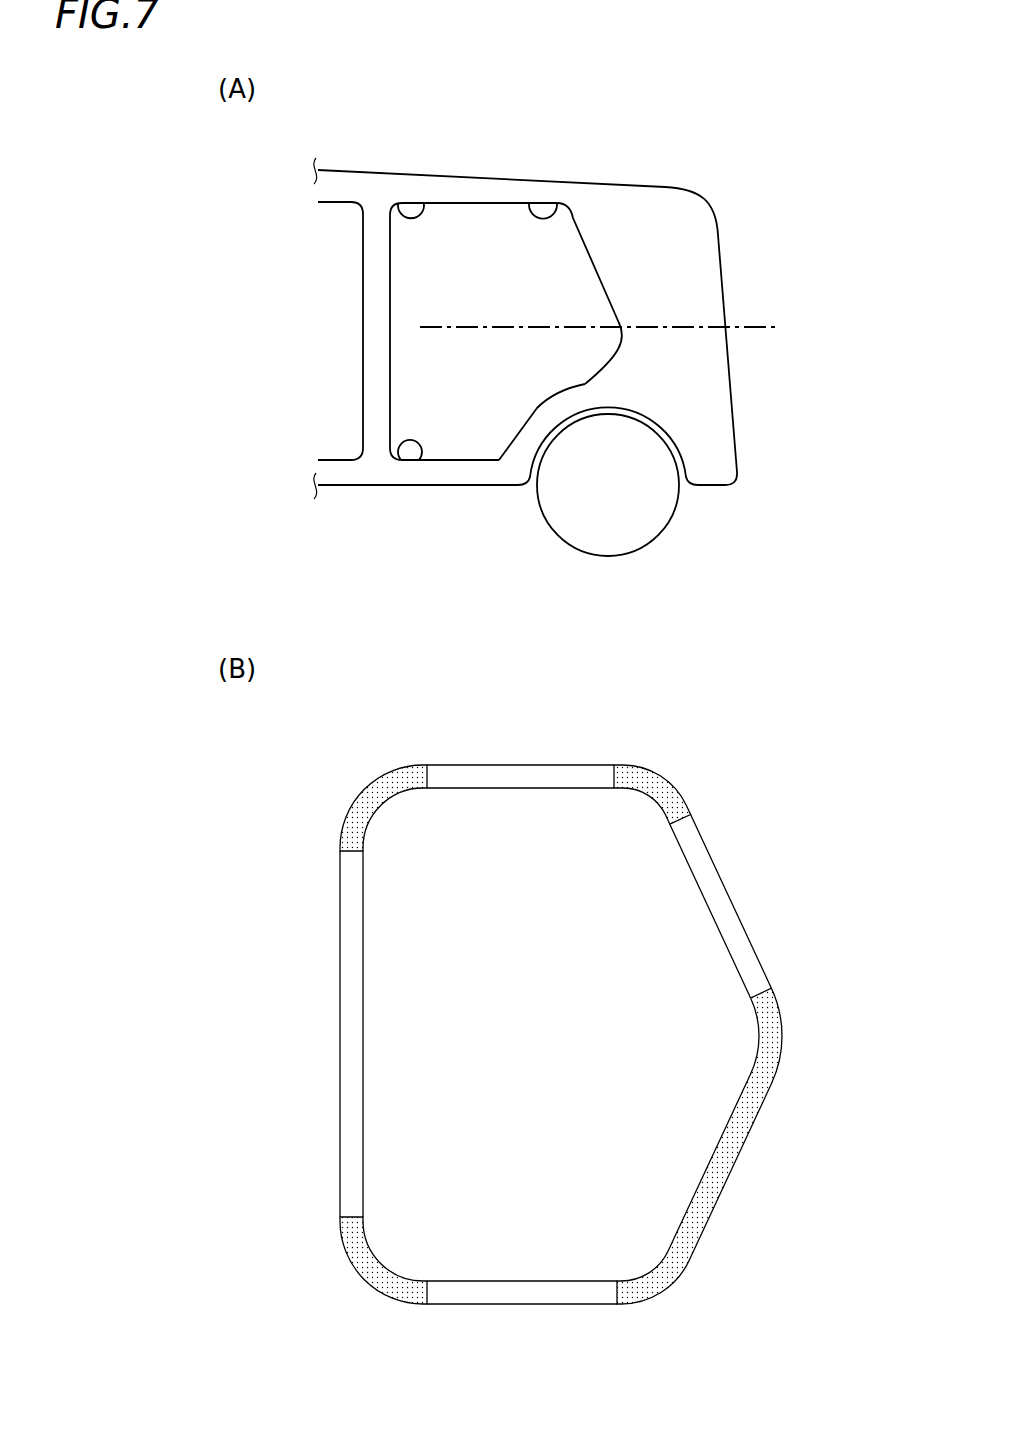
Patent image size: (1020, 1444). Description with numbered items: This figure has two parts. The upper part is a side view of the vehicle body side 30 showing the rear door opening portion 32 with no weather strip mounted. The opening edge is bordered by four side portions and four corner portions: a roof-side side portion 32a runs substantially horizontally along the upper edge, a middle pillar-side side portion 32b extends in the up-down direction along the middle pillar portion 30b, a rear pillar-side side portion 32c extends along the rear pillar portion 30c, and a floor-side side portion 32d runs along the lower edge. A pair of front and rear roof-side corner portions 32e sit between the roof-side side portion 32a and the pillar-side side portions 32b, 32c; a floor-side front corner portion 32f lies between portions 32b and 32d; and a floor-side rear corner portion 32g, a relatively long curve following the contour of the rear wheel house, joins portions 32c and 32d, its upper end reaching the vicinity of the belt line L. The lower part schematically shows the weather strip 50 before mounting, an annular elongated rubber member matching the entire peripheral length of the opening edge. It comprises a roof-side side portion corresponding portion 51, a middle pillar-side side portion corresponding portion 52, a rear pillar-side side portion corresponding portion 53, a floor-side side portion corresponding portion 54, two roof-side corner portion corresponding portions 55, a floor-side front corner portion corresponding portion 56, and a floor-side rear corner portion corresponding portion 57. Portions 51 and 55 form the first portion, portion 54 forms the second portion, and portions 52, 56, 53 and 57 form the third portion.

The vehicle body side portion 30 is at (564, 340).
The middle pillar portion 30b is at (376, 330).
The rear pillar portion 30c is at (623, 245).
The rear door opening portion 32 is at (506, 330).
The roof-side side portion 32a is at (471, 206).
The middle pillar-side side portion 32b is at (391, 301).
The rear pillar-side side portion 32c is at (598, 277).
The floor-side side portion 32d is at (449, 460).
The roof-side corner portions 32e is at (425, 210).
The floor-side front corner portion 32f is at (418, 450).
The floor-side rear corner portion 32g is at (540, 407).
The belt line L is at (609, 293).
The weather strip 50 is at (560, 1034).
The roof-side side portion corresponding portion 51 is at (516, 776).
The middle pillar-side side portion corresponding portion 52 is at (352, 1030).
The rear pillar-side side portion corresponding portion 53 is at (720, 900).
The floor-side side portion corresponding portion 54 is at (515, 1293).
The roof-side corner portion corresponding portions 55 is at (378, 792).
The floor-side front corner portion corresponding portion 56 is at (370, 1266).
The floor-side rear corner portion corresponding portion 57 is at (727, 1157).